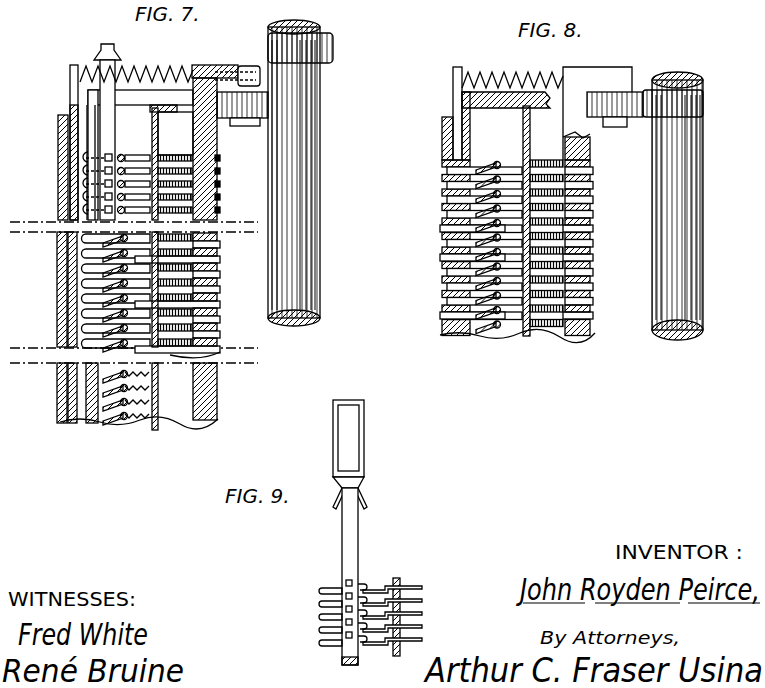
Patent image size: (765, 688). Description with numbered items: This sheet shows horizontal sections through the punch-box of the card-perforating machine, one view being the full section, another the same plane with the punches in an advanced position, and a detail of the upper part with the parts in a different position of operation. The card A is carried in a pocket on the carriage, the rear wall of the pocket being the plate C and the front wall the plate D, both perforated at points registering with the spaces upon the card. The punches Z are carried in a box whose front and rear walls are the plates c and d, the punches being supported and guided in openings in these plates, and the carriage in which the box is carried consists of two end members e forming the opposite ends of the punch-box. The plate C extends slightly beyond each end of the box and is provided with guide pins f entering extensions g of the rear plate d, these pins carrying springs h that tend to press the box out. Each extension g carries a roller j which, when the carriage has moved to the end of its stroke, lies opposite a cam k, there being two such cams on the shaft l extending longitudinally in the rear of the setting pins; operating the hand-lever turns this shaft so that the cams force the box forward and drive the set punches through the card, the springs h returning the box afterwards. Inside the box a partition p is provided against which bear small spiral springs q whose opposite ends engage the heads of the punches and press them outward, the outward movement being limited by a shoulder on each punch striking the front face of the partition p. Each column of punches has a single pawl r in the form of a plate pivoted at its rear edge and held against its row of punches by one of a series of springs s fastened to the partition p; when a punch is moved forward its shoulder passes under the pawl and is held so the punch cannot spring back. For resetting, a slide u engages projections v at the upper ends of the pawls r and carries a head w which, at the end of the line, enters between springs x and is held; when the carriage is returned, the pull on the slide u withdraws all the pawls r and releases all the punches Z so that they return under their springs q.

In FIG. 7, the rear wall plate C is at (70, 83).
In FIG. 8, the rear wall plate C is at (455, 80).
In FIG. 7, the front wall of punch-box c is at (97, 122).
In FIG. 8, the front wall of punch-box c is at (463, 125).
In FIG. 7, the front wall plate D is at (58, 183).
In FIG. 8, the front wall plate D is at (445, 221).
In FIG. 7, the card A is at (62, 264).
In FIG. 8, the card A is at (447, 166).
In FIG. 9, the card A is at (392, 617).
In FIG. 7, the punches Z is at (68, 316).
In FIG. 8, the punches Z is at (482, 326).
In FIG. 9, the punches Z is at (322, 592).
In FIG. 7, the projections on pawls v is at (107, 157).
In FIG. 9, the projections on pawls v is at (348, 584).
In FIG. 7, the slide u is at (101, 126).
In FIG. 9, the slide u is at (343, 548).
In FIG. 7, the head of slide w is at (115, 55).
In FIG. 9, the head of slide w is at (355, 476).
In FIG. 9, the springs for slide head x is at (364, 450).
In FIG. 7, the end members of carriage e is at (128, 100).
In FIG. 8, the end members of carriage e is at (520, 98).
In FIG. 7, the guide pins f is at (147, 70).
In FIG. 8, the guide pins f is at (476, 70).
In FIG. 7, the springs on guide pins h is at (186, 63).
In FIG. 8, the springs on guide pins h is at (506, 72).
In FIG. 7, the extensions of rear plate g is at (248, 67).
In FIG. 7, the roller j is at (232, 118).
In FIG. 8, the roller j is at (608, 118).
In FIG. 7, the cam k is at (323, 63).
In FIG. 8, the cam k is at (700, 105).
In FIG. 7, the shaft l is at (320, 148).
In FIG. 8, the shaft l is at (700, 207).
In FIG. 7, the rear wall of punch-box d is at (193, 135).
In FIG. 7, the pawl r is at (123, 158).
In FIG. 8, the pawl r is at (478, 162).
In FIG. 9, the pawl r is at (362, 585).
In FIG. 7, the partition p is at (158, 382).
In FIG. 8, the partition p is at (528, 328).
In FIG. 7, the spiral spring q is at (170, 355).
In FIG. 7, the pawl springs s is at (137, 412).